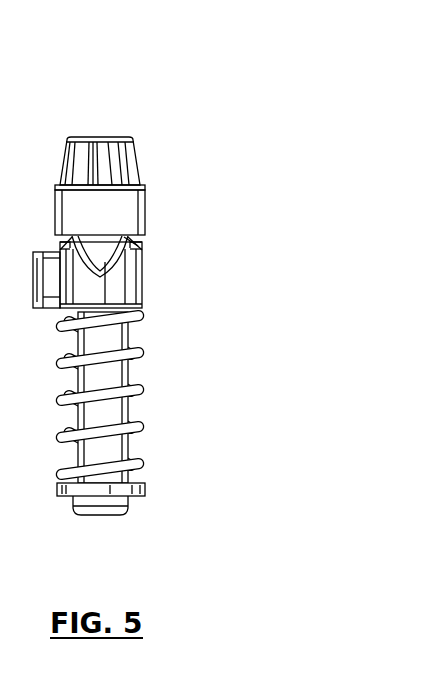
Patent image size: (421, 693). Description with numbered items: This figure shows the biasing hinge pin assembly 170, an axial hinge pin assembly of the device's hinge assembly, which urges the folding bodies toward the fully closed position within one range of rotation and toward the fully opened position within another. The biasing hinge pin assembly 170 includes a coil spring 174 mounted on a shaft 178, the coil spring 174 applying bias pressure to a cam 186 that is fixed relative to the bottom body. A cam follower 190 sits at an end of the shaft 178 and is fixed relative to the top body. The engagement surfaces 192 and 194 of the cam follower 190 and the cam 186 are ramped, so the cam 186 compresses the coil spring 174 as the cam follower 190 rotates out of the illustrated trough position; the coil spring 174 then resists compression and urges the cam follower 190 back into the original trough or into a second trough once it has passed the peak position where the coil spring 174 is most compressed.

The biasing hinge pin assembly 170 is at (170, 159).
The cam follower 190 is at (140, 208).
The engagement surface 192 is at (135, 243).
The engagement surface 194 is at (138, 260).
The cam 186 is at (135, 287).
The shaft 178 is at (136, 426).
The coil spring 174 is at (139, 452).